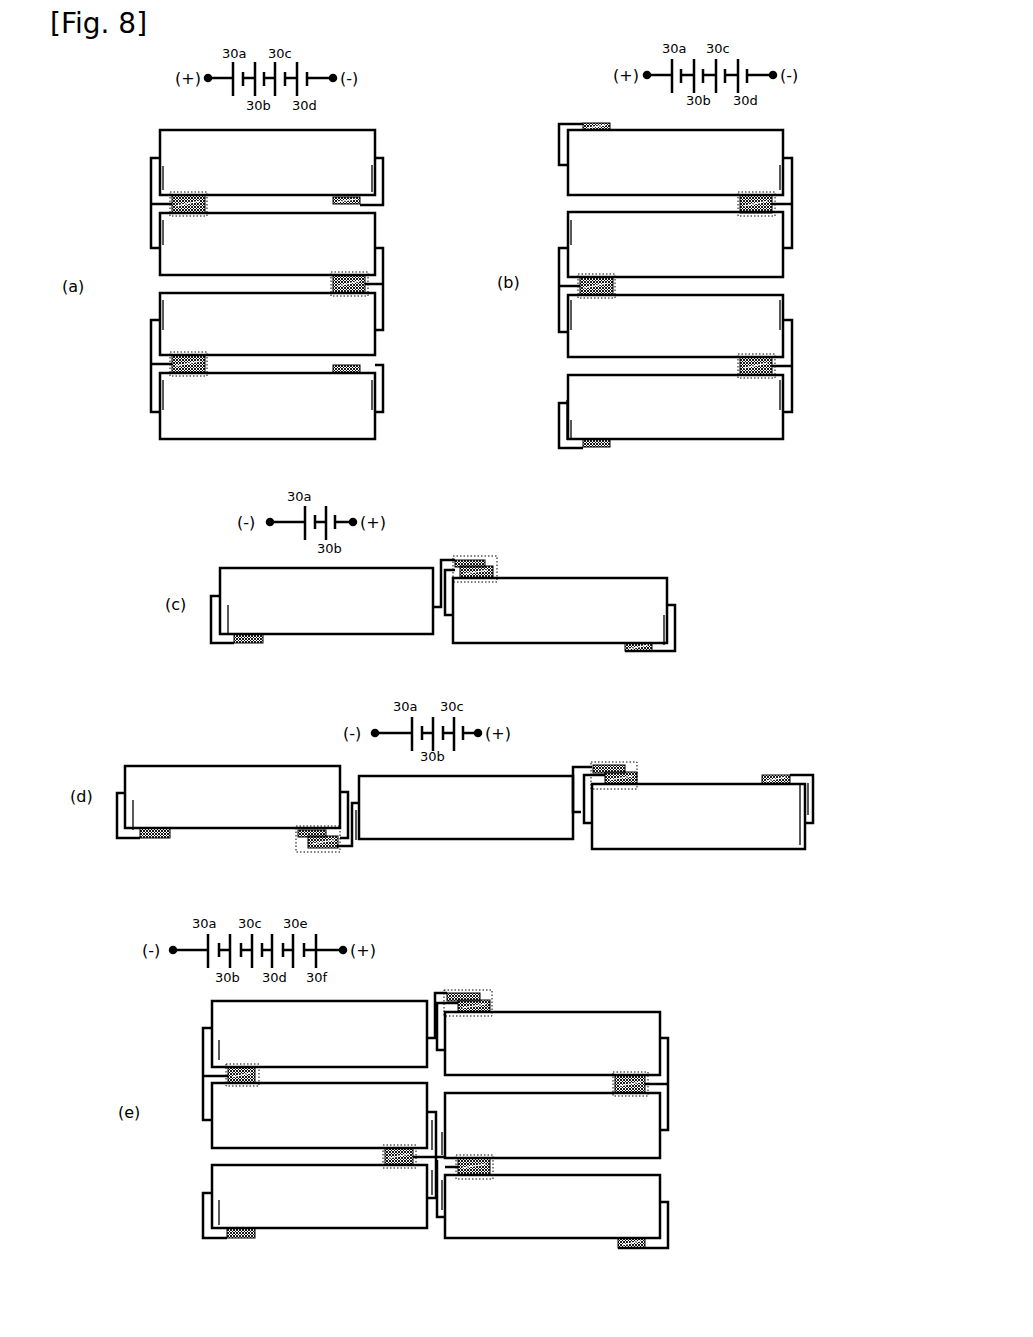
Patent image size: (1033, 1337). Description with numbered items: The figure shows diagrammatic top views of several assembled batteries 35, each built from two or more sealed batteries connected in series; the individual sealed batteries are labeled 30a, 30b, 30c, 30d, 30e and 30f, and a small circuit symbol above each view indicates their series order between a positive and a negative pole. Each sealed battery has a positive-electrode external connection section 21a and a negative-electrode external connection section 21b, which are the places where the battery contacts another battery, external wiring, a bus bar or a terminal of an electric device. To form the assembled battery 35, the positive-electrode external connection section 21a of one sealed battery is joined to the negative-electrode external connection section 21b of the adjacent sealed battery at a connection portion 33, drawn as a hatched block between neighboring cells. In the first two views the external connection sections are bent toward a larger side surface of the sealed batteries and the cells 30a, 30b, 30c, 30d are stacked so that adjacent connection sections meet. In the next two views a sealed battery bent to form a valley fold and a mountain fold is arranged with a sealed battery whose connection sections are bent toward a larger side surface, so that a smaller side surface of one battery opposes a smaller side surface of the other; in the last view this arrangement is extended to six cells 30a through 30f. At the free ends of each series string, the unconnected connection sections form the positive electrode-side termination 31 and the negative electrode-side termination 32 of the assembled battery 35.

The positive-electrode external connection section 21a is at (162, 213).
The negative-electrode external connection section 21b is at (172, 200).
The sealed battery 30a is at (454, 679).
The sealed battery 30b is at (471, 680).
The sealed battery 30c is at (482, 680).
The sealed battery 30d is at (471, 724).
The sealed battery 30e is at (552, 1125).
The sealed battery 30f is at (552, 1206).
The positive electrode-side termination 31 is at (355, 199).
The negative electrode-side termination 32 is at (360, 368).
The connection portion 33 is at (185, 195).
The assembled battery 35 is at (372, 116).